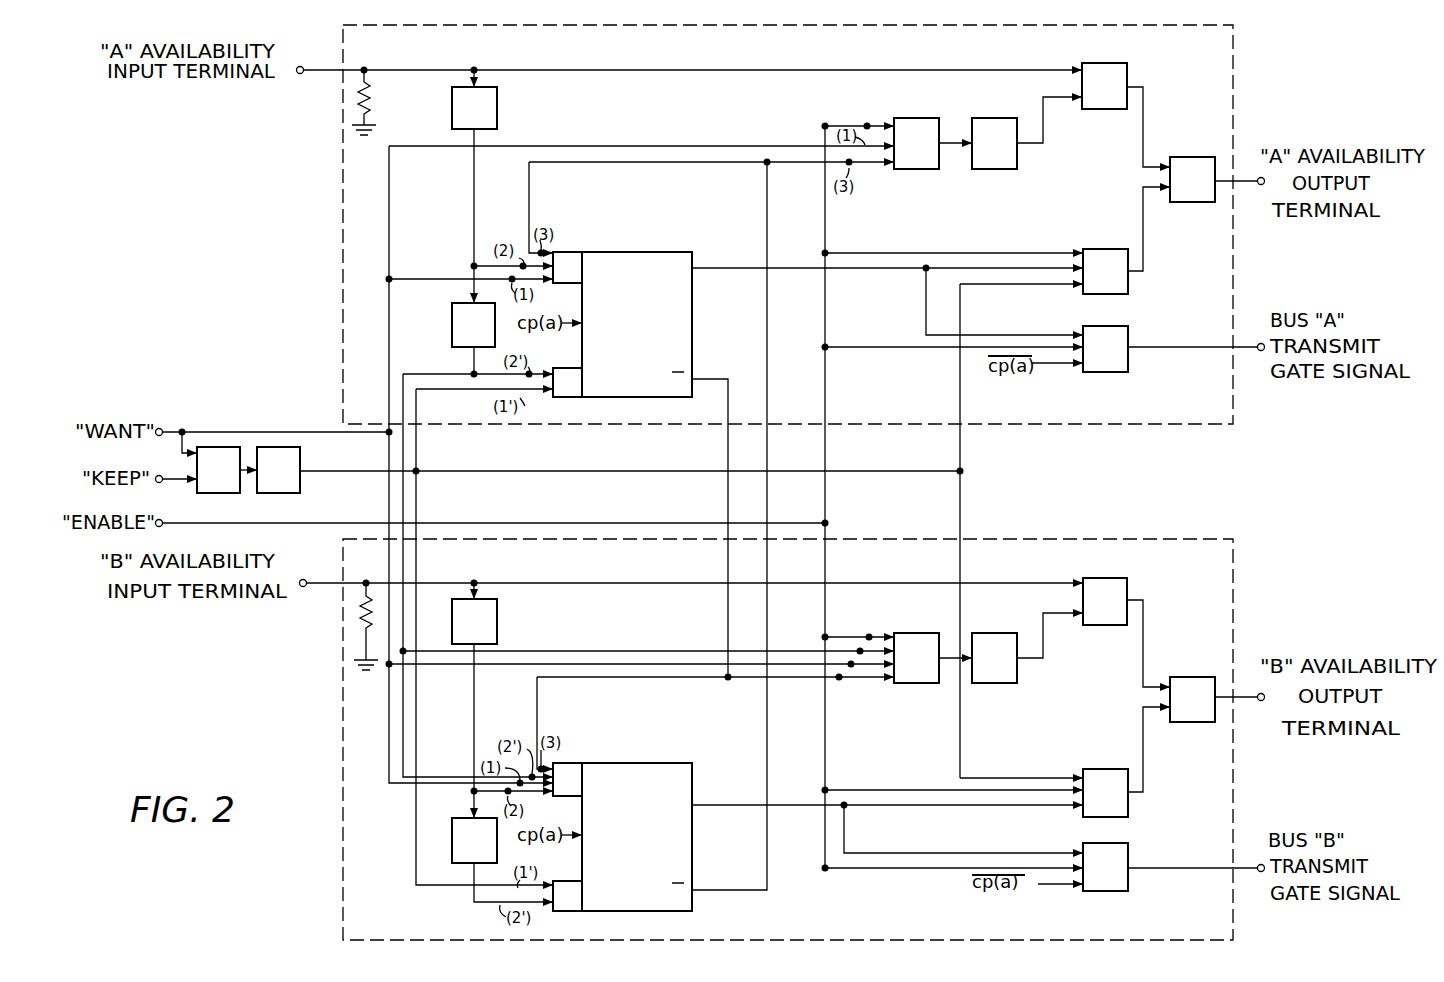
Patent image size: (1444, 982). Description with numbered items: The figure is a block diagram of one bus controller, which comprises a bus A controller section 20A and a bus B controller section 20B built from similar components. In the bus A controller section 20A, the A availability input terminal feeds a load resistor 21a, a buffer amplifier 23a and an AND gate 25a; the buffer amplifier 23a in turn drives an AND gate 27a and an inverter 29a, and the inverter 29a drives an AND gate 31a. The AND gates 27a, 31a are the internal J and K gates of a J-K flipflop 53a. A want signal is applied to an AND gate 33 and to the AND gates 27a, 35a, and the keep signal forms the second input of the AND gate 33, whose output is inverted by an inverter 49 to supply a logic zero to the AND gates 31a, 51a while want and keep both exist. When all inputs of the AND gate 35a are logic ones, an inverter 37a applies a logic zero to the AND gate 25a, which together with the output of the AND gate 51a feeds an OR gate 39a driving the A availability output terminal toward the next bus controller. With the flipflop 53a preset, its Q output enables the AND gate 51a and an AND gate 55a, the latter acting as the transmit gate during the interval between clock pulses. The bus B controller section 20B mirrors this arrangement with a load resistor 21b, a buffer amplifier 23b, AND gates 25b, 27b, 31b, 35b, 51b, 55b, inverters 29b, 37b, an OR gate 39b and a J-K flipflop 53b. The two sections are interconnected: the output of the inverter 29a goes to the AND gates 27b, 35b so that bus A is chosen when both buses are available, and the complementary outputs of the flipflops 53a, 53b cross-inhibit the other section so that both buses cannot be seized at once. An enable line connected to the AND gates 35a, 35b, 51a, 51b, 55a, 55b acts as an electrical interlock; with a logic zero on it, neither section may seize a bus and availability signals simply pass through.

The bus A controller section 20A is at (788, 224).
The bus B controller section 20B is at (788, 739).
The load resistor 21a is at (370, 101).
The load resistor 21b is at (360, 622).
The buffer amplifier 23a is at (497, 105).
The buffer amplifier 23b is at (497, 617).
The AND gate 25a is at (1127, 76).
The AND gate 25b is at (1105, 578).
The AND gate 27a is at (572, 252).
The AND gate 27b is at (572, 763).
The inverter 29a is at (452, 330).
The inverter 29b is at (452, 840).
The AND gate 31a is at (567, 397).
The AND gate 31b is at (567, 911).
The AND gate 33 is at (213, 447).
The AND gate 35a is at (916, 118).
The AND gate 35b is at (916, 633).
The inverter 37a is at (994, 118).
The inverter 37b is at (994, 633).
The OR gate 39a is at (1192, 157).
The OR gate 39b is at (1192, 677).
The inverter 49 is at (273, 447).
The AND gate 51a is at (1103, 249).
The AND gate 51b is at (1100, 769).
The J-K flipflop 53a is at (679, 252).
The J-K flipflop 53b is at (655, 763).
The AND gate 55a is at (1128, 334).
The AND gate 55b is at (1128, 855).